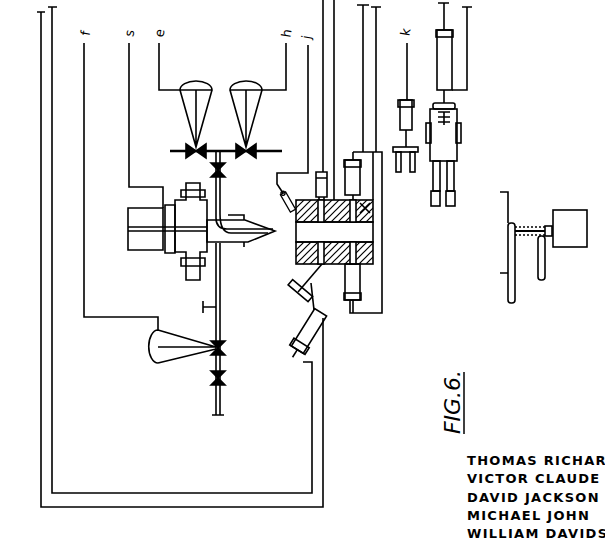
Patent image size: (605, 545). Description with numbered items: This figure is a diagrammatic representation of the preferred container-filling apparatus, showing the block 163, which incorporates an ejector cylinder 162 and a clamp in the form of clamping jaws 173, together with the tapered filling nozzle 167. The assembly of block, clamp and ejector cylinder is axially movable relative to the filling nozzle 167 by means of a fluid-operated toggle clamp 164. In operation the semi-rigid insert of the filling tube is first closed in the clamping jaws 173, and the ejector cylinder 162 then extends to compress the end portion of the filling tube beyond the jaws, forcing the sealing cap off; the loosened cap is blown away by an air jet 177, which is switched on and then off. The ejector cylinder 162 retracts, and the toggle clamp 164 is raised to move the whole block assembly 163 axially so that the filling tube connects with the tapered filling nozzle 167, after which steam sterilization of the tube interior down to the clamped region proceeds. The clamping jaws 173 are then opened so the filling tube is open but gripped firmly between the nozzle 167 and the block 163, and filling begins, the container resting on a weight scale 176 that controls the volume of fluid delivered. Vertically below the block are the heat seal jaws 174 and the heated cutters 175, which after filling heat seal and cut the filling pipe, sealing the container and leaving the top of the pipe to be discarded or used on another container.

The ejector cylinder 162 is at (318, 172).
The block 163 is at (281, 250).
The toggle clamp 164 is at (313, 280).
The tapered filling nozzle 167 is at (270, 242).
The clamping jaws 173 is at (361, 255).
The heat seal jaws 174 is at (453, 60).
The heated cutters 175 is at (405, 100).
The weight scale 176 is at (516, 224).
The air jet 177 is at (277, 190).